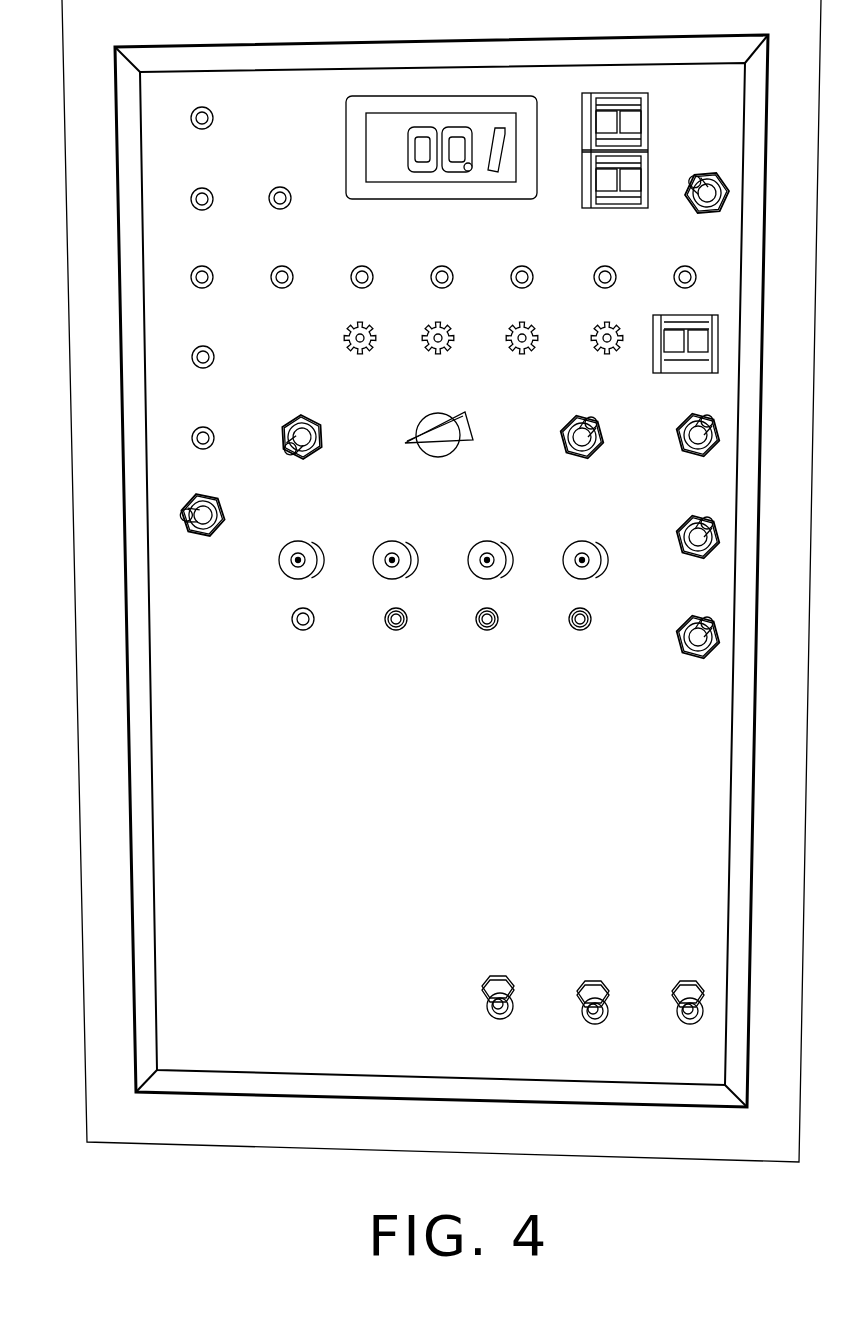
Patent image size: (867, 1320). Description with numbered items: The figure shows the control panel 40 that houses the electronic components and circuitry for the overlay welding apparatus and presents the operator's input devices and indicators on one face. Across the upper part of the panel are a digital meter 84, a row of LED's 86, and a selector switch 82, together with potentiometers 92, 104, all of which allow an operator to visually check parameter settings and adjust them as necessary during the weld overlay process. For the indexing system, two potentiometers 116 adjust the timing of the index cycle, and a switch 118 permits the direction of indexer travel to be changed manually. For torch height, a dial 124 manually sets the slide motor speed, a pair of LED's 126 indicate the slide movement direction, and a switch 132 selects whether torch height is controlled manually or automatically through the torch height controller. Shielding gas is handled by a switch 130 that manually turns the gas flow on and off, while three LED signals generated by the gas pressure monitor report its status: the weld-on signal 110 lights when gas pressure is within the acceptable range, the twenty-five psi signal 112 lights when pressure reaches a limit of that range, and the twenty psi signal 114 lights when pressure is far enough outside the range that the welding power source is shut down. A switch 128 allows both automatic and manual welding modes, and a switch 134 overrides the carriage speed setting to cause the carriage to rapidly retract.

The control panel 40 is at (350, 825).
The selector switch 82 is at (466, 448).
The digital meter 84 is at (346, 137).
The row of LED's 86 is at (677, 268).
The potentiometer 92 is at (522, 355).
The potentiometer 104 is at (358, 354).
The "Weld ON" signal 110 is at (210, 108).
The "25 PSI" signal 112 is at (290, 208).
The "20 PSI" signal 114 is at (210, 189).
The potentiometers 116 is at (628, 102).
The switch 118 is at (688, 185).
The dial 124 is at (715, 332).
The pair of LED's 126 is at (192, 357).
The switch 128 is at (300, 455).
The switch 130 is at (198, 535).
The switch 132 is at (688, 523).
The switch 134 is at (697, 422).